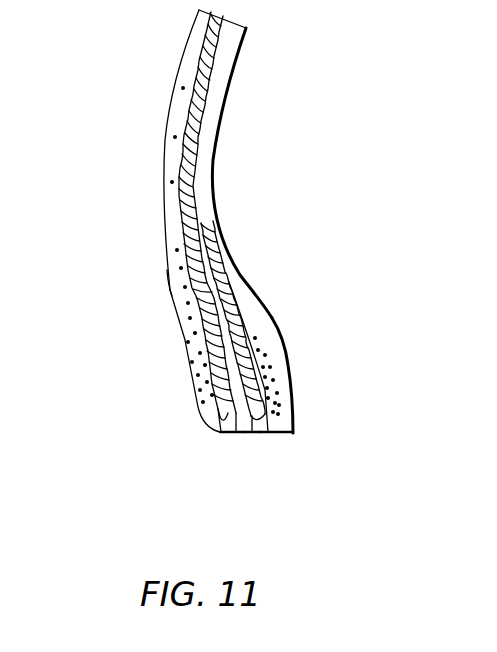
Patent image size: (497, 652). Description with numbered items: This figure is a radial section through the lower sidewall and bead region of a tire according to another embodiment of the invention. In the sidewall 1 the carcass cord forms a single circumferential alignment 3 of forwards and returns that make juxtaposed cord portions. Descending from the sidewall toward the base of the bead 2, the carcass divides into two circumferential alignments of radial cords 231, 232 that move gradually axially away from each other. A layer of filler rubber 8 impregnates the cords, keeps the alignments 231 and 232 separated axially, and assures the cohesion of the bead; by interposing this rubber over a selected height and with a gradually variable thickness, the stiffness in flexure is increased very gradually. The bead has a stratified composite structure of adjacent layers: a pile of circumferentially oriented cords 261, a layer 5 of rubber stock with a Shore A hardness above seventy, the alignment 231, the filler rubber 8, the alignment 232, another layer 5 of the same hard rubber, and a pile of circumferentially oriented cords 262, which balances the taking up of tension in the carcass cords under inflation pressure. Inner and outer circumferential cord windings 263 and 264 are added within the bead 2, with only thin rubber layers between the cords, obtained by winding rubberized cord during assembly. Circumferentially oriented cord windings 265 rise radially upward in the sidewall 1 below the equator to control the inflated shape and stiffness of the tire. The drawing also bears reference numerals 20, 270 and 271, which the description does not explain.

The sidewall 1 is at (185, 63).
The bead 2 is at (177, 322).
The single circumferential alignment 3 is at (208, 88).
The layer of rubber stock 5 is at (214, 300).
The layer of filler rubber 8 is at (242, 432).
The channel 20 is at (257, 433).
The circumferential alignment of radial cords 231 is at (238, 291).
The circumferential alignment of radial cords 232 is at (177, 280).
The pile of circumferentially oriented cords 261 is at (282, 418).
The pile of circumferentially oriented cords 262 is at (213, 401).
The inner circumferential cord winding 263 is at (278, 383).
The outer circumferential cord winding 264 is at (188, 362).
The circumferentially oriented cord windings 265 is at (173, 217).
The outer surface 270 is at (170, 153).
The outer wall 271 is at (207, 190).